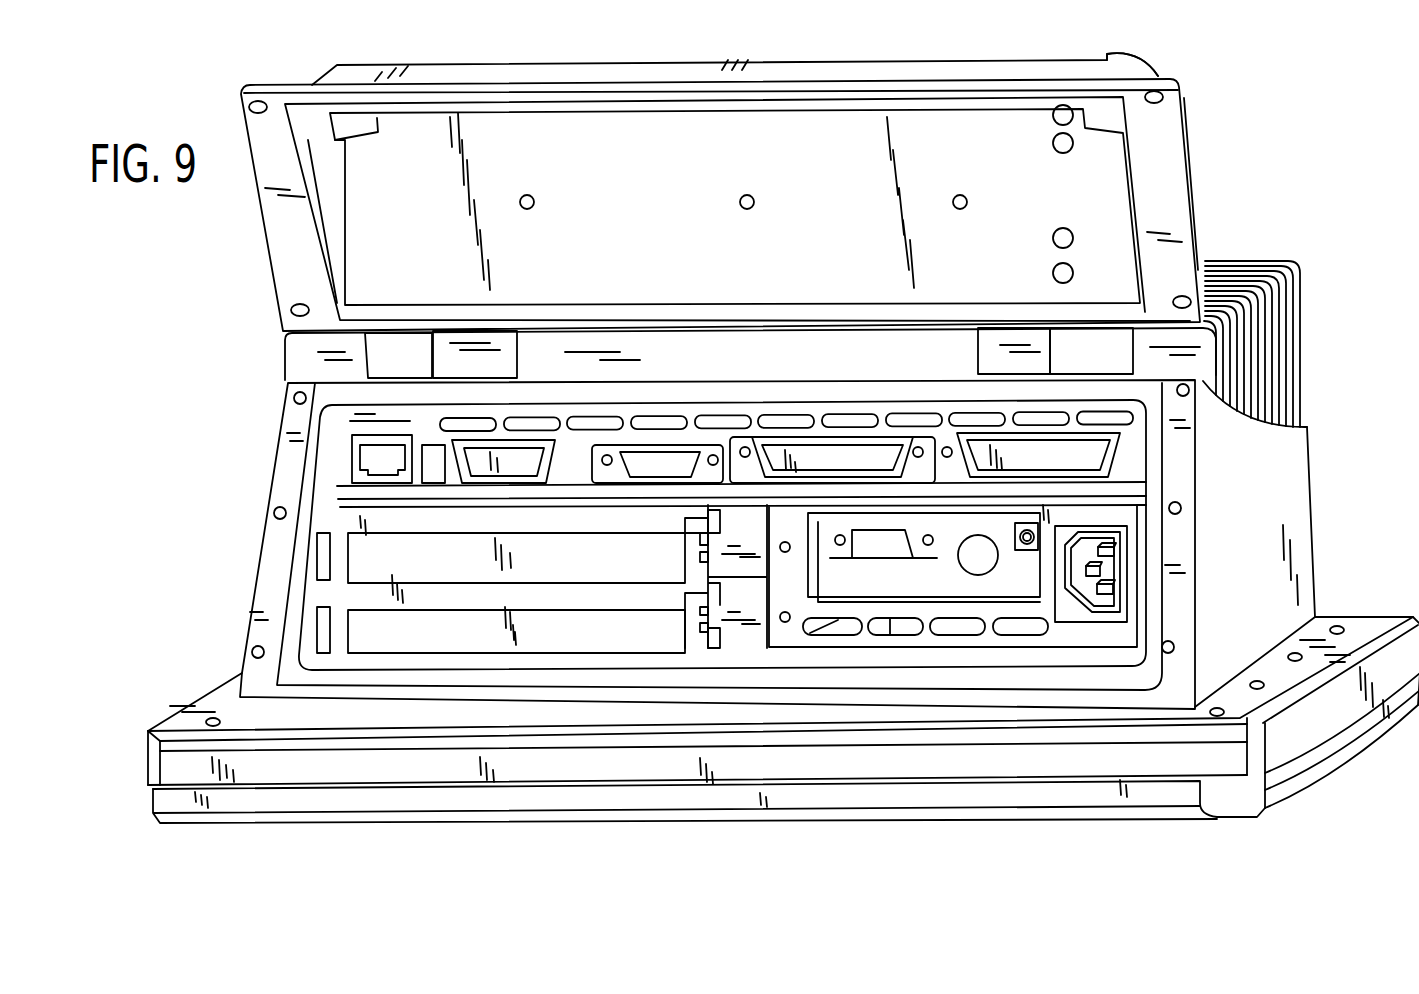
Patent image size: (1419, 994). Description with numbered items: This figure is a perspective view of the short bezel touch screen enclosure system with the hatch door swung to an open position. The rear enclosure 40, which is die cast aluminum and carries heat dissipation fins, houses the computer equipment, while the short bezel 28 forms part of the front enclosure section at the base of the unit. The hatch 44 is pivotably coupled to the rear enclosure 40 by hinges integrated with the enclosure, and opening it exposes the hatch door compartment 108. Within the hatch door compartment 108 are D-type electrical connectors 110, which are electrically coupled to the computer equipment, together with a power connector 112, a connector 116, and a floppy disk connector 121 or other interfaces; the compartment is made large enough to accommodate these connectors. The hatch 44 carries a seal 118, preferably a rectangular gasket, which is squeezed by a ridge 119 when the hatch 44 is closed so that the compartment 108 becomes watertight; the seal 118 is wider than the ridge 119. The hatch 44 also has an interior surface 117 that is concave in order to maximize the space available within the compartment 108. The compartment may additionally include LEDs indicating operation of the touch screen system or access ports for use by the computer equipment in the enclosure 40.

The short bezel 28 is at (1197, 770).
The rear enclosure 40 is at (1313, 573).
The hatch 44 is at (746, 170).
The hatch door compartment 108 is at (1120, 470).
The D-type electrical connectors 110 is at (510, 458).
The power connector 112 is at (1113, 567).
The connector 116 is at (387, 453).
The interior surface 117 is at (812, 128).
The seal 118 is at (305, 588).
The ridge 119 is at (1110, 82).
The floppy disk connector 121 is at (658, 460).